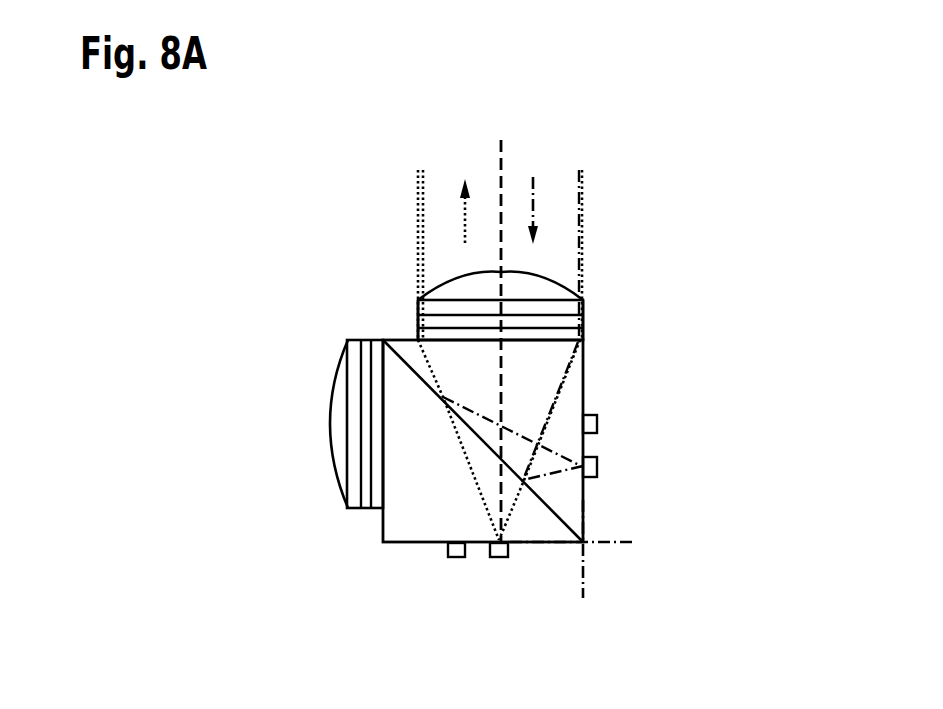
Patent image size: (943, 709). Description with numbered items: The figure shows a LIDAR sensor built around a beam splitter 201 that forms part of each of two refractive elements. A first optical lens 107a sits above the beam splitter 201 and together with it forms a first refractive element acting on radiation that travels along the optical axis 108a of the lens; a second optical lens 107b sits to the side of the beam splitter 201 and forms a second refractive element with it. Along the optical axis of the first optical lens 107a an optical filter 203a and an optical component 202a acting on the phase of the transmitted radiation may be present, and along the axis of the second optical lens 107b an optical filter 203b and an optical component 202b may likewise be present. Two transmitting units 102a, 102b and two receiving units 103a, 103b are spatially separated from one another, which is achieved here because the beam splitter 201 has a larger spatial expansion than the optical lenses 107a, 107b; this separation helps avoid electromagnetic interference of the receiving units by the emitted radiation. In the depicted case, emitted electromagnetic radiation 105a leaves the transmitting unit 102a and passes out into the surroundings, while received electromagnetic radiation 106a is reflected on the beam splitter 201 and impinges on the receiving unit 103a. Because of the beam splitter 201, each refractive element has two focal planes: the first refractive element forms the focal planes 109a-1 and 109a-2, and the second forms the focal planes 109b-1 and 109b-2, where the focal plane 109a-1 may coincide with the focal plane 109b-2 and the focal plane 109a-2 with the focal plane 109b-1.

The beam splitter 201 is at (583, 390).
The optical component 202a is at (583, 333).
The optical component 202b is at (382, 520).
The optical filter 203a is at (417, 322).
The optical filter 203b is at (363, 338).
The first optical lens 107a is at (562, 285).
The second optical lens 107b is at (332, 487).
The optical axis 108a is at (502, 160).
The emitted electromagnetic radiation 105a is at (463, 218).
The received electromagnetic radiation 106a is at (535, 218).
The transmitting unit 102a is at (497, 558).
The transmitting unit 102b is at (597, 418).
The receiving unit 103a is at (597, 463).
The receiving unit 103b is at (450, 558).
The first focal plane 109a-1 is at (661, 580).
The second focal plane 109b-2 is at (613, 545).
The first focal plane 109b-1 is at (527, 591).
The second focal plane 109a-2 is at (583, 578).